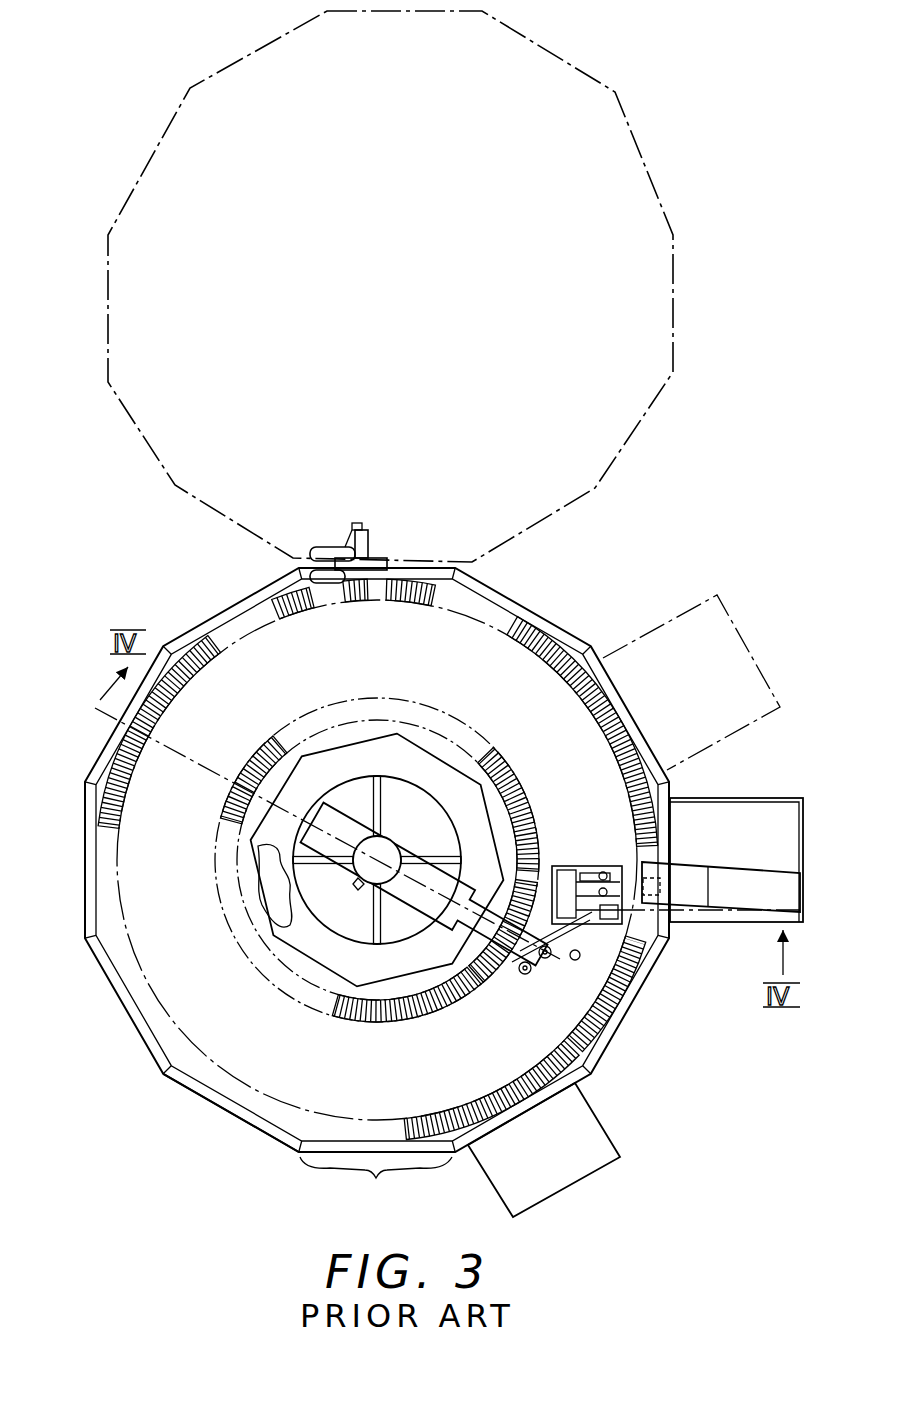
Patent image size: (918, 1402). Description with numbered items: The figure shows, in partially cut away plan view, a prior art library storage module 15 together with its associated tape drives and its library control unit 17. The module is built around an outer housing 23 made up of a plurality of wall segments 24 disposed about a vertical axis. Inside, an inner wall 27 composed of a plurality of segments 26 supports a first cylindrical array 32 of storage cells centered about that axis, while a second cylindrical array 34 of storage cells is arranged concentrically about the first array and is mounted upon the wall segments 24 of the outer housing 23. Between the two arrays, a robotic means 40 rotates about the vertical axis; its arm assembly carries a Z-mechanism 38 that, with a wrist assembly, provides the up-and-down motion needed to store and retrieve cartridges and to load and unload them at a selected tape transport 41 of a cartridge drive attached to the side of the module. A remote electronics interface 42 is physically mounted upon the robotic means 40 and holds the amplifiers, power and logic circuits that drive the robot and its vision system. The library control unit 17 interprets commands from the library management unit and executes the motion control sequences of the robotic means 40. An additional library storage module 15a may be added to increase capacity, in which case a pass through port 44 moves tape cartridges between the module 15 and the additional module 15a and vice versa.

The library storage module 15 is at (88, 1043).
The additional library storage module 15a is at (568, 489).
The library control unit 17 is at (575, 1168).
The outer housing 23 is at (255, 1132).
The wall segments 24 is at (377, 1179).
The segments 26 is at (350, 942).
The inner wall 27 is at (444, 771).
The first cylindrical array 32 is at (397, 1036).
The second cylindrical array 34 is at (154, 777).
The Z-mechanism 38 is at (548, 972).
The robotic means 40 is at (583, 853).
The tape transport 41 is at (730, 886).
The remote electronics interface 42 is at (340, 812).
The pass through port 44 is at (386, 538).